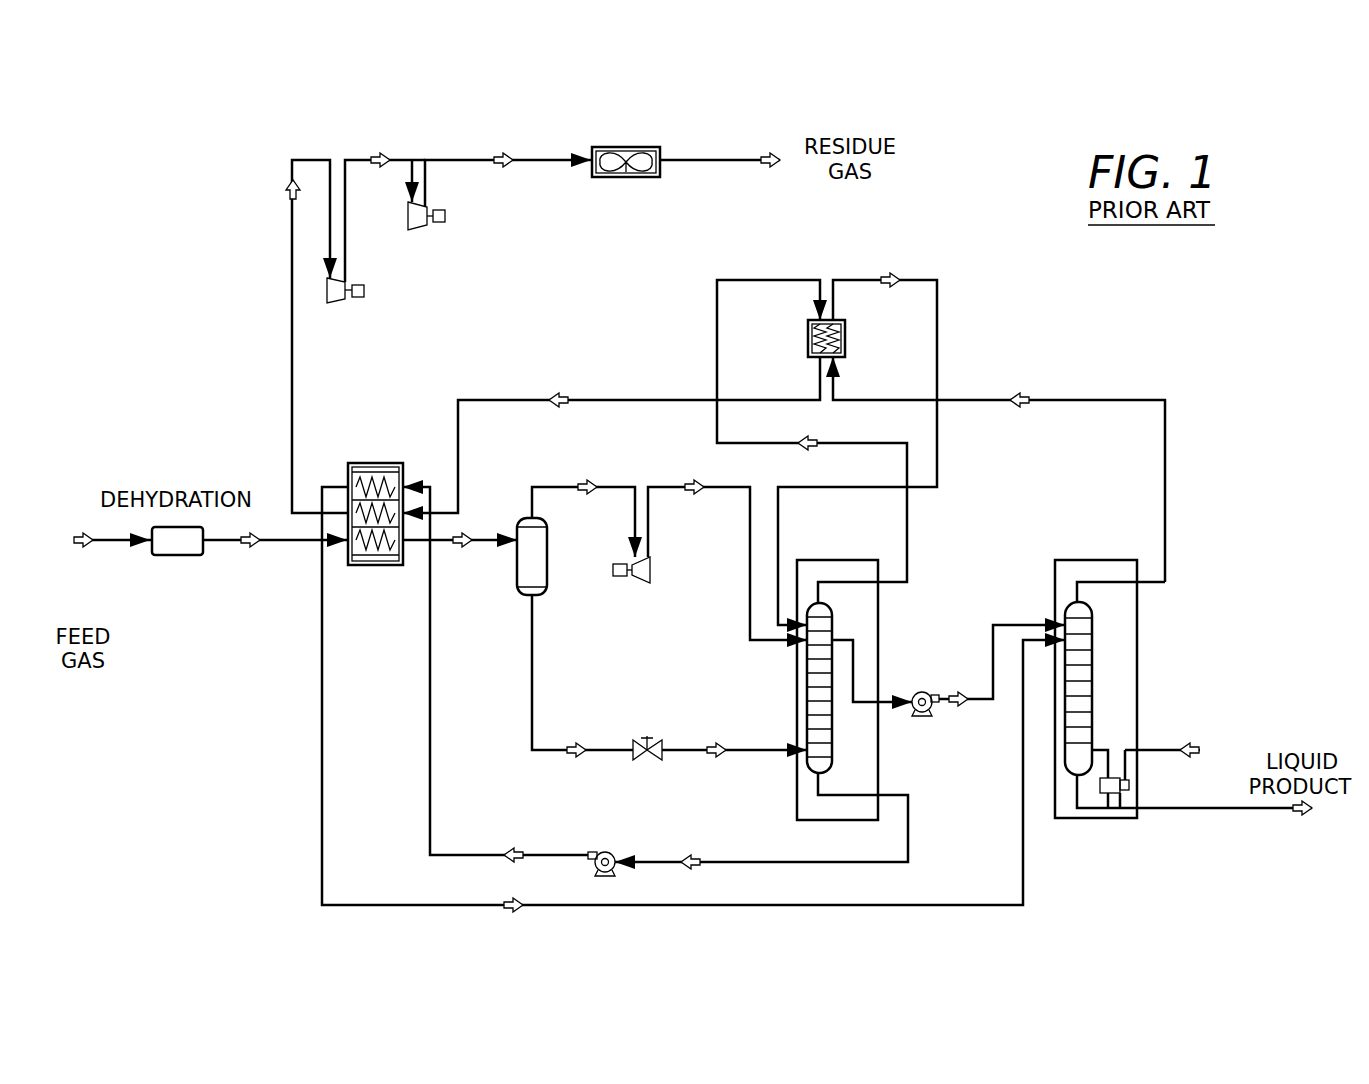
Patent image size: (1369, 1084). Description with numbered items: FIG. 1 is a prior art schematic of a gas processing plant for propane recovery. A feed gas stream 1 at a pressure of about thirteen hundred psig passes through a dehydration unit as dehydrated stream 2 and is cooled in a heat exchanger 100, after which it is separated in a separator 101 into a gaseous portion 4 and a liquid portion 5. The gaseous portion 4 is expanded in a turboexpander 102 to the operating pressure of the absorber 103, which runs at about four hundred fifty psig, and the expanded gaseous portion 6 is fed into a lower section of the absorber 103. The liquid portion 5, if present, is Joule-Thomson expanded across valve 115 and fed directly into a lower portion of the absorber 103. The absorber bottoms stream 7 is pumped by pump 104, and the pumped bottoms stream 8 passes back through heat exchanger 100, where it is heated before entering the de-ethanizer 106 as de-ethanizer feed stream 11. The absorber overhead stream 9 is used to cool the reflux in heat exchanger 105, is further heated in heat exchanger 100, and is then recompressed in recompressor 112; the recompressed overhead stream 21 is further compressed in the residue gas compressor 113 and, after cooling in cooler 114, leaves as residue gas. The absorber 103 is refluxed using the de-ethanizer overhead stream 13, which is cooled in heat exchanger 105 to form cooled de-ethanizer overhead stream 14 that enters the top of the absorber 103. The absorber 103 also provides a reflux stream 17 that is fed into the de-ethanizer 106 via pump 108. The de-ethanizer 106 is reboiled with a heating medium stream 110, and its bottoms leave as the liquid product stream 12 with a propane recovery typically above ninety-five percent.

The feed gas stream 1 is at (80, 547).
The dehydrated feed stream 2 is at (248, 547).
The gaseous portion 4 is at (585, 480).
The liquid portion 5 is at (575, 745).
The expanded gaseous portion 6 is at (690, 480).
The absorber bottoms stream 7 is at (692, 850).
The cooled absorber bottoms stream 8 is at (515, 850).
The absorber overhead stream 9 is at (814, 450).
The de-ethanizer feed stream 11 is at (560, 395).
The liquid product stream 12 is at (1300, 815).
The overhead stream 13 is at (1022, 395).
The cooled de-ethanizer overhead stream 14 is at (890, 270).
The reflux stream 17 is at (955, 690).
The recompressed overhead stream 21 is at (378, 153).
The heat exchanger 100 is at (372, 567).
The separator 101 is at (548, 558).
The turboexpander 102 is at (640, 585).
The absorber 103 is at (797, 682).
The pump 104 is at (600, 850).
The heat exchanger 105 is at (808, 344).
The de-ethanizer 106 is at (1095, 820).
The pump 108 is at (925, 715).
The heating medium stream 110 is at (1192, 745).
The recompressor 112 is at (338, 305).
The residue gas compressor 113 is at (420, 231).
The cooler 114 is at (623, 146).
The expansion valve 115 is at (647, 737).